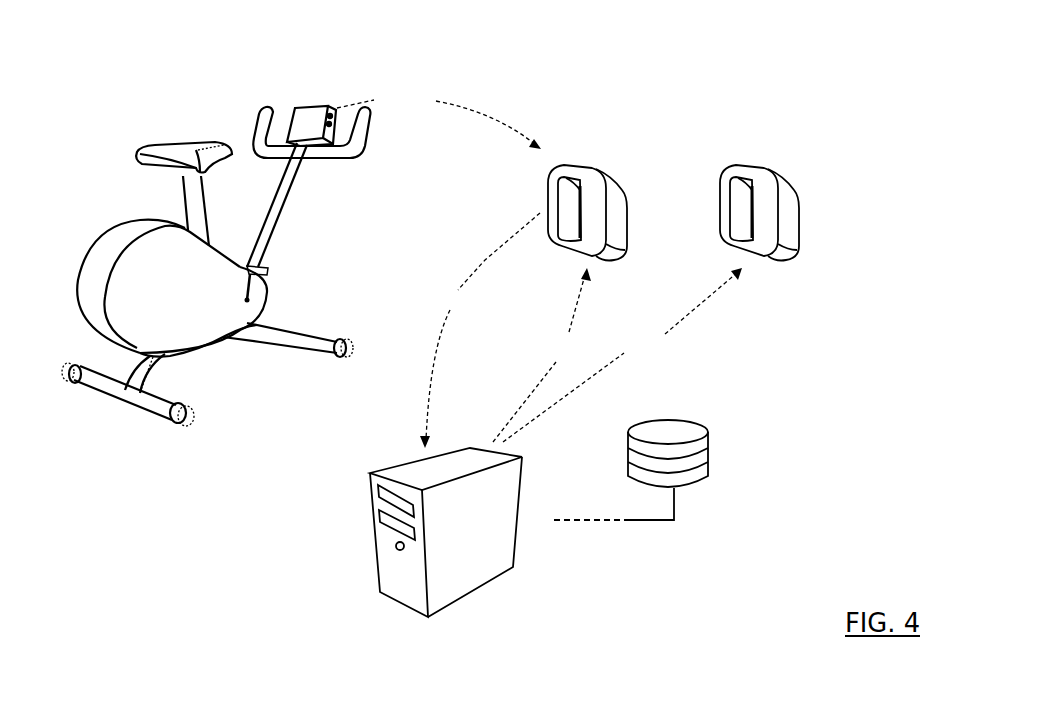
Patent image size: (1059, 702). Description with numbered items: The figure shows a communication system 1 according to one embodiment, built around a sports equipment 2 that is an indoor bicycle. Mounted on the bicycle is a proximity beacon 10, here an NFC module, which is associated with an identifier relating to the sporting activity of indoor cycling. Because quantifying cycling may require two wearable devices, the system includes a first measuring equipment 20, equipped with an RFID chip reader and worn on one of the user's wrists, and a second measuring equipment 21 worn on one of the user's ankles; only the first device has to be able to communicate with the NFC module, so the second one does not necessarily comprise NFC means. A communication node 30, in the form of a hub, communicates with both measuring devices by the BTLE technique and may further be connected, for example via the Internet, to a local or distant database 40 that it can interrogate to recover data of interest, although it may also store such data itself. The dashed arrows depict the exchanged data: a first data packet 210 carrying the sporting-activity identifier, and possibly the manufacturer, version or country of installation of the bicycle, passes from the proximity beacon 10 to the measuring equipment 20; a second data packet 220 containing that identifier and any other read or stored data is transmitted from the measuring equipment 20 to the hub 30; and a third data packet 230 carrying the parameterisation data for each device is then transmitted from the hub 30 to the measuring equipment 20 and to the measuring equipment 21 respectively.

The communication system 1 is at (165, 38).
The sports equipment 2 is at (180, 152).
The proximity beacon 10 is at (330, 108).
The measuring equipment 20 is at (585, 170).
The measuring equipment 21 is at (765, 170).
The communication node 30 is at (372, 470).
The database 40 is at (683, 428).
The first data packet 210 is at (439, 113).
The second data packet 220 is at (480, 330).
The third data packet 230 is at (617, 355).